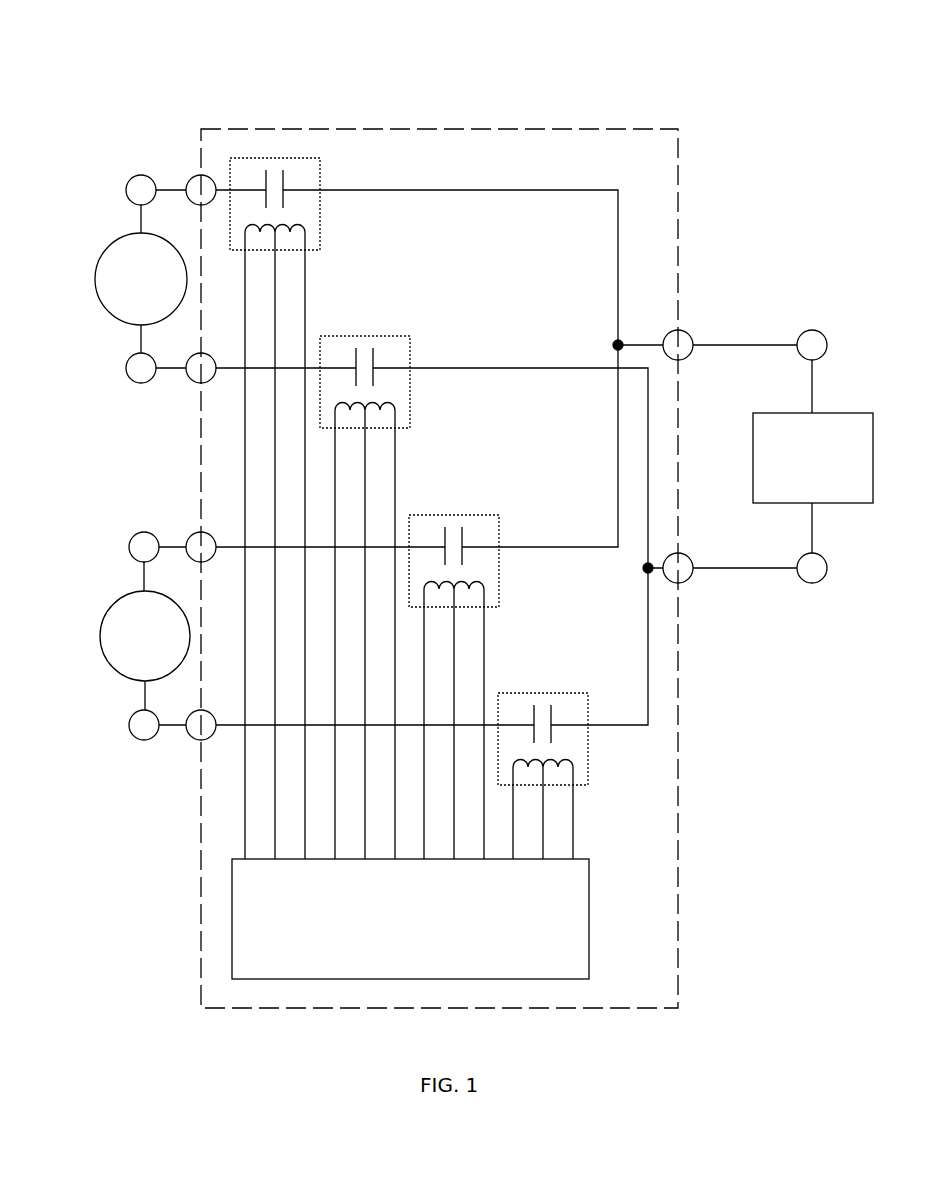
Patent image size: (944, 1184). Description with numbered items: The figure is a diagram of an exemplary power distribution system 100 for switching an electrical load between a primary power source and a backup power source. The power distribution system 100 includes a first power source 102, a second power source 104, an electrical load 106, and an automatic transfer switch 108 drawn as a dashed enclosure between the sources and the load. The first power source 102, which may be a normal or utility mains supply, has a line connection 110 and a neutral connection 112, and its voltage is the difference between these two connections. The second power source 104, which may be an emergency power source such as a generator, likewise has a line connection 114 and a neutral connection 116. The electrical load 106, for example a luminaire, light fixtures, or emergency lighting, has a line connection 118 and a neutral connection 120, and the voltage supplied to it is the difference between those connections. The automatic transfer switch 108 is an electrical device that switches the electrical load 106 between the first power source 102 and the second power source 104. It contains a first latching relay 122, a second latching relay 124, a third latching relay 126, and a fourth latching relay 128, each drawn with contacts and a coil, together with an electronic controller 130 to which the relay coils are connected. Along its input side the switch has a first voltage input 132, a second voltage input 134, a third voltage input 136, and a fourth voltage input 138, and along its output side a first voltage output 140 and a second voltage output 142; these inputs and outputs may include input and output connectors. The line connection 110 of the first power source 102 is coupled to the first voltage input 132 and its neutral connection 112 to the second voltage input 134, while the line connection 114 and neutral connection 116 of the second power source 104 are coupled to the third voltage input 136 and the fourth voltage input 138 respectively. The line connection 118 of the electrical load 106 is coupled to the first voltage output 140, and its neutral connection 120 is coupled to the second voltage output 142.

The power distribution system 100 is at (147, 33).
The first power source 102 is at (121, 259).
The second power source 104 is at (125, 615).
The electrical load 106 is at (778, 457).
The automatic transfer switch 108 is at (439, 546).
The line connection 110 is at (109, 167).
The neutral connection 112 is at (105, 348).
The line connection 114 is at (113, 525).
The neutral connection 116 is at (113, 703).
The line connection 118 is at (781, 324).
The neutral connection 120 is at (780, 548).
The first latching relay 122 is at (312, 508).
The second latching relay 124 is at (403, 597).
The third latching relay 126 is at (491, 687).
The fourth latching relay 128 is at (581, 776).
The electronic controller 130 is at (447, 919).
The first voltage input 132 is at (167, 167).
The second voltage input 134 is at (167, 392).
The third voltage input 136 is at (168, 525).
The fourth voltage input 138 is at (166, 748).
The first voltage output 140 is at (713, 370).
The second voltage output 142 is at (713, 592).